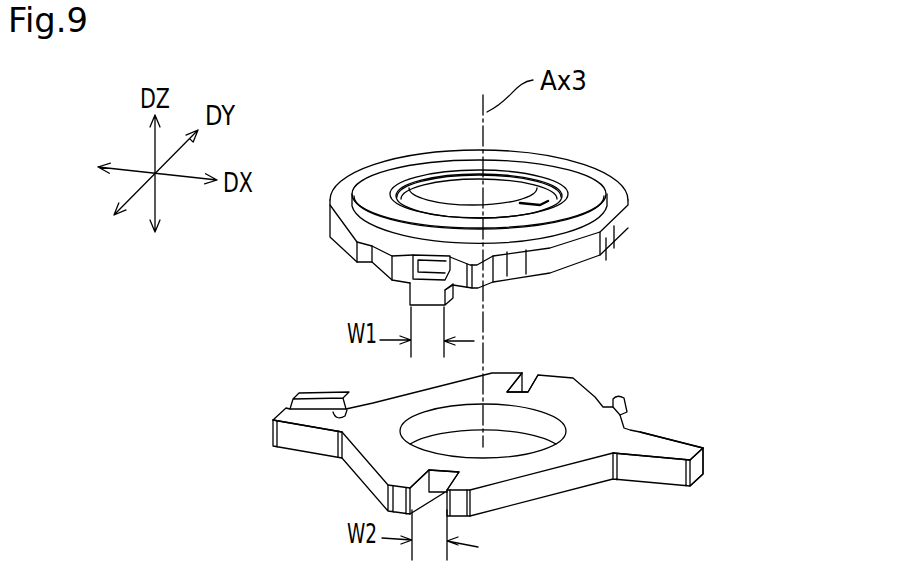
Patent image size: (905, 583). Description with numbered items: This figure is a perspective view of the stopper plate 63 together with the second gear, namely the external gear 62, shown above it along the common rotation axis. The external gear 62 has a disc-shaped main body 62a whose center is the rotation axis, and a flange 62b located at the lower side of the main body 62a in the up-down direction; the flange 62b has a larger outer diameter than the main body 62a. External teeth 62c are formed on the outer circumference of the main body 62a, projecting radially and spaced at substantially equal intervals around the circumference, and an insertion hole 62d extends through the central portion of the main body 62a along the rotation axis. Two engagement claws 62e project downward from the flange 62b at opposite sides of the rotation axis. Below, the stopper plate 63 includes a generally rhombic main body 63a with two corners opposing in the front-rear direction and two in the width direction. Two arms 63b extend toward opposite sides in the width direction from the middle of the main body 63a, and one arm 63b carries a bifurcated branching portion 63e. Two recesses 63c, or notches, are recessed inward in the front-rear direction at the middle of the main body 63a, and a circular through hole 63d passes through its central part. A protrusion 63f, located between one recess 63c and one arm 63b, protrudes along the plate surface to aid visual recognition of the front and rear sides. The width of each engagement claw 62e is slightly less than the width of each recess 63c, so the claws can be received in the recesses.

The external gear 62 is at (512, 210).
The main body 62a is at (605, 183).
The flange 62b is at (622, 233).
The external teeth 62c is at (626, 207).
The insertion hole 62d is at (438, 193).
The engagement claws 62e is at (415, 292).
The stopper plate 63 is at (478, 436).
The main body 63a is at (627, 432).
The arms 63b is at (270, 418).
The recesses 63c is at (440, 474).
The through hole 63d is at (535, 423).
The branching portion 63e is at (330, 412).
The protrusion 63f is at (613, 410).